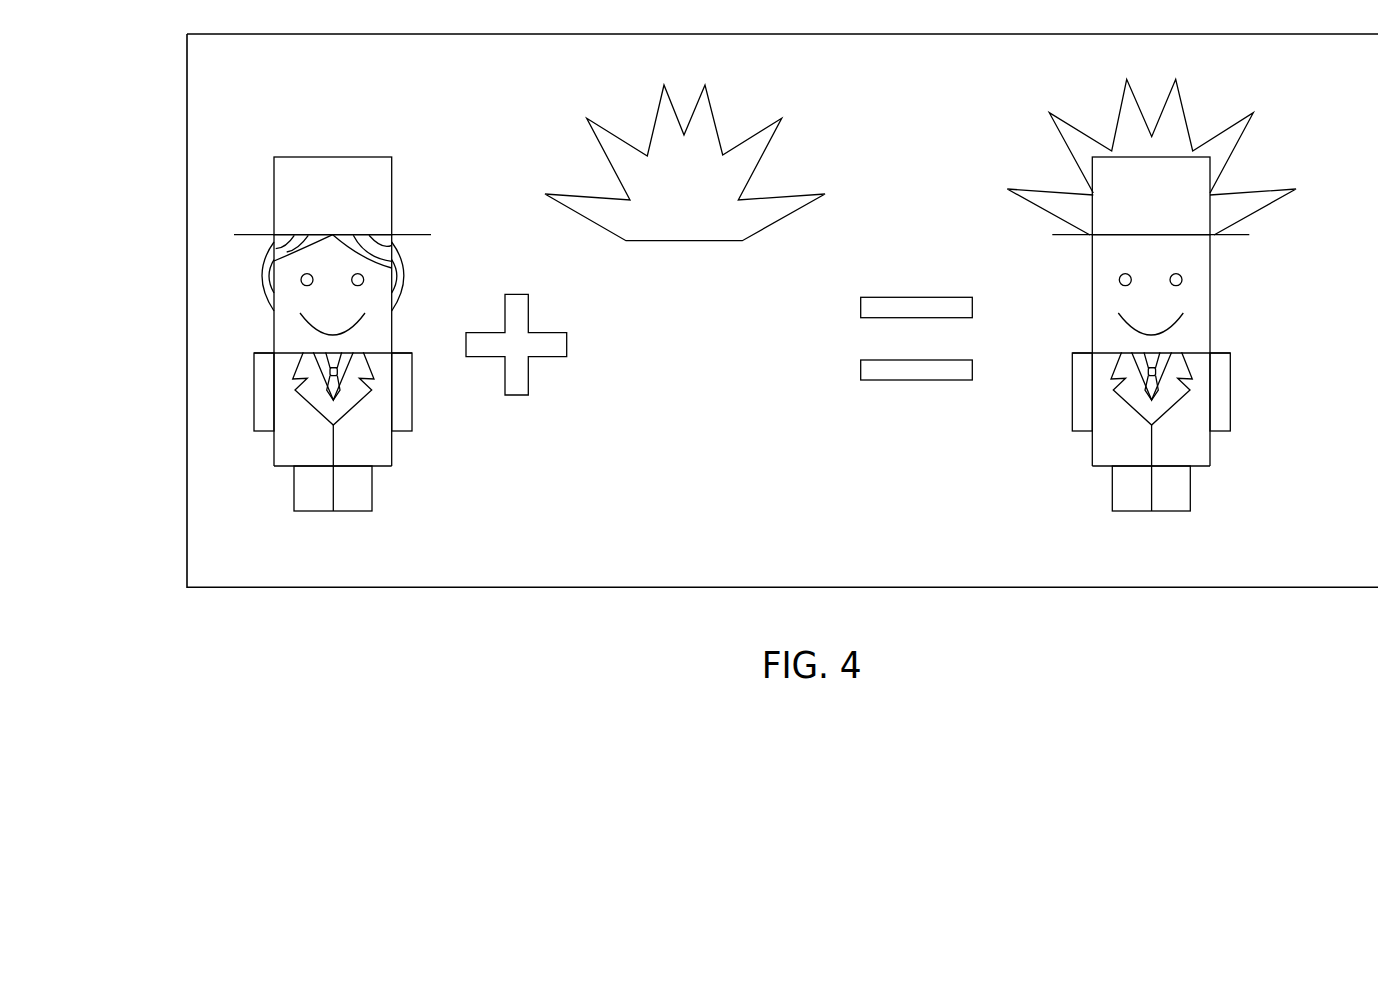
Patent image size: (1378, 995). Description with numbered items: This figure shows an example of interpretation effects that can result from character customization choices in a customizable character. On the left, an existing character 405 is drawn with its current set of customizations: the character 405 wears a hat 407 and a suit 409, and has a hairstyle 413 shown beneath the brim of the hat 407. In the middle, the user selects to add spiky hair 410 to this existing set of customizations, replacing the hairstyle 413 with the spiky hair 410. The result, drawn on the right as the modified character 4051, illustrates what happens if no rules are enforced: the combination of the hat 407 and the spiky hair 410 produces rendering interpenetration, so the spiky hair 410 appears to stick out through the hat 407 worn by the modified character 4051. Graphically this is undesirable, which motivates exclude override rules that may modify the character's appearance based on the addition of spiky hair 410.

The character 405 is at (310, 334).
The hat 407 is at (371, 186).
The hairstyle 413 is at (283, 248).
The suit 409 is at (302, 438).
The spiky hair 410 is at (683, 241).
The modified character 4051 is at (1190, 488).